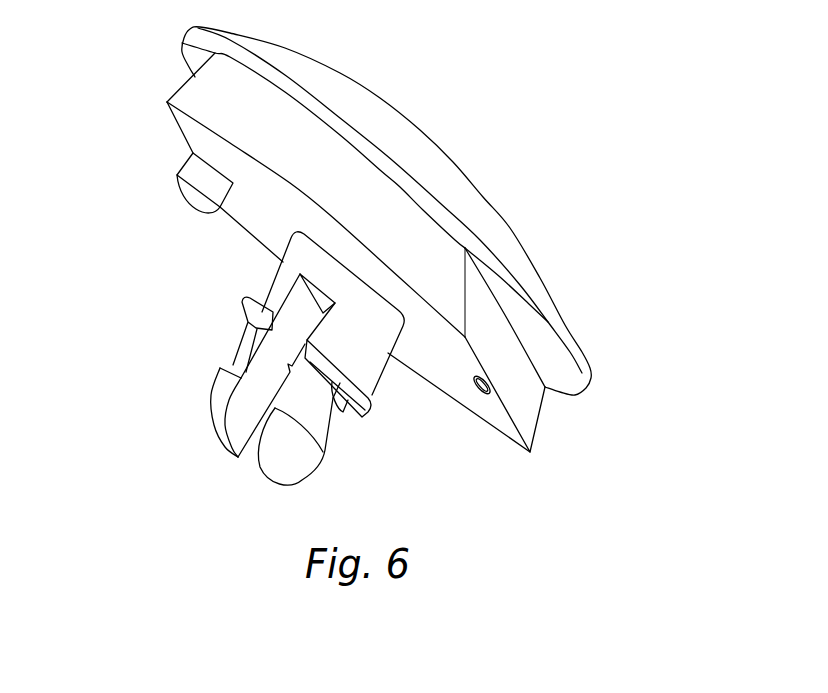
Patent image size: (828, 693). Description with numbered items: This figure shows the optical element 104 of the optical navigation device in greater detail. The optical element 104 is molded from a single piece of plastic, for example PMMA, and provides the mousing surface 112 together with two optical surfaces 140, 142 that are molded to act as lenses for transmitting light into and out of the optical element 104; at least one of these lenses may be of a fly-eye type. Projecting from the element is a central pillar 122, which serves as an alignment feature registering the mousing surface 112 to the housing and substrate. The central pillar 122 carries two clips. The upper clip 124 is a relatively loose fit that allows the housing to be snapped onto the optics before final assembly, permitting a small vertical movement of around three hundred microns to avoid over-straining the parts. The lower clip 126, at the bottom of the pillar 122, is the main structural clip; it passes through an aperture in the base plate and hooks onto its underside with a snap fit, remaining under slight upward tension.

The optical element 104 is at (593, 172).
The mousing surface 112 is at (420, 147).
The central pillar 122 is at (277, 282).
The upper clip 124 is at (340, 408).
The lower clip 126 is at (218, 405).
The optical surface 140 is at (195, 193).
The optical surface 142 is at (482, 392).